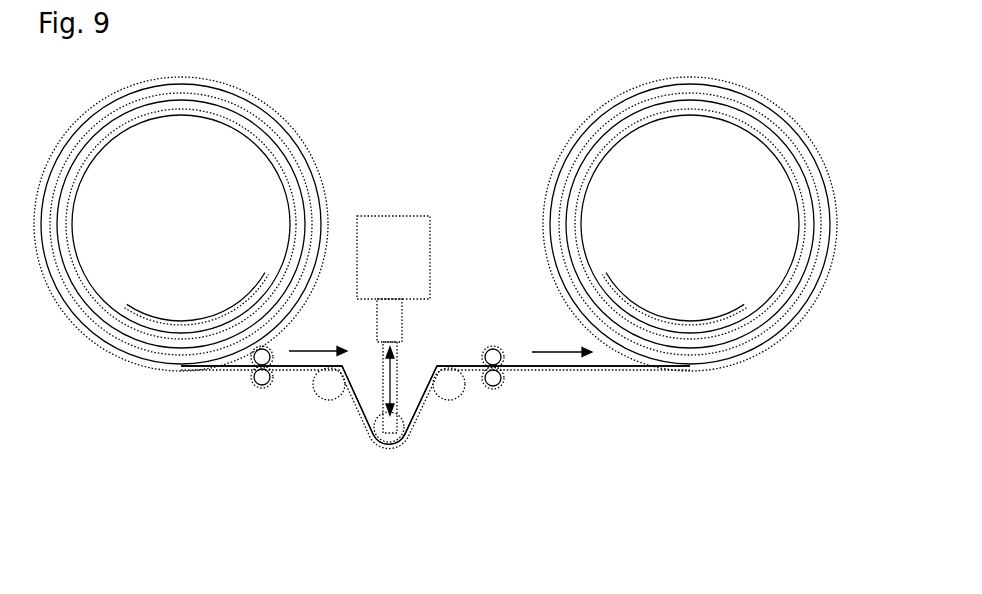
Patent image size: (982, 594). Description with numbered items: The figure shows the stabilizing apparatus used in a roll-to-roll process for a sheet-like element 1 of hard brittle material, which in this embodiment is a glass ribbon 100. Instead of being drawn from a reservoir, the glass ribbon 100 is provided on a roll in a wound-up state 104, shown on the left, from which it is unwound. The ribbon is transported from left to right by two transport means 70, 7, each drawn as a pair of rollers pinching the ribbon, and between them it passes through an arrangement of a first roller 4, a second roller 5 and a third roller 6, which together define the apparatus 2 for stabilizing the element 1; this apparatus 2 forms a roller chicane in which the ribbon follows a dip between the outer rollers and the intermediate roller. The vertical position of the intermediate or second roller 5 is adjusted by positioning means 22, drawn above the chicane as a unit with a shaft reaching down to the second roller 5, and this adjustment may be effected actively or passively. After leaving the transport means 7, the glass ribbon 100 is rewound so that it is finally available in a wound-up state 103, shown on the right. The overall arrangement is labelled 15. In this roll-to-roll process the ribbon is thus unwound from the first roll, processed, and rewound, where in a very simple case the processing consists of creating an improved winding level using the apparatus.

The element 1 is at (620, 368).
The glass ribbon 100 is at (435, 405).
The apparatus for stabilizing the element 2 is at (370, 465).
The first roller 4 is at (317, 402).
The second roller 5 is at (402, 438).
The third roller 6 is at (455, 397).
The transport means 7 is at (502, 390).
The processing apparatus 15 is at (363, 346).
The positioning means 22 is at (430, 250).
The transport means 70 is at (250, 387).
The wound-up state 103 is at (785, 330).
The wound-up state 104 is at (107, 348).